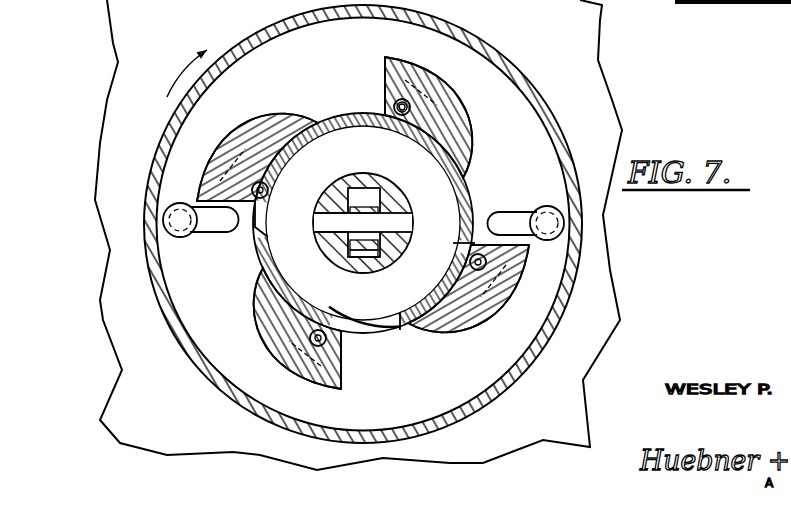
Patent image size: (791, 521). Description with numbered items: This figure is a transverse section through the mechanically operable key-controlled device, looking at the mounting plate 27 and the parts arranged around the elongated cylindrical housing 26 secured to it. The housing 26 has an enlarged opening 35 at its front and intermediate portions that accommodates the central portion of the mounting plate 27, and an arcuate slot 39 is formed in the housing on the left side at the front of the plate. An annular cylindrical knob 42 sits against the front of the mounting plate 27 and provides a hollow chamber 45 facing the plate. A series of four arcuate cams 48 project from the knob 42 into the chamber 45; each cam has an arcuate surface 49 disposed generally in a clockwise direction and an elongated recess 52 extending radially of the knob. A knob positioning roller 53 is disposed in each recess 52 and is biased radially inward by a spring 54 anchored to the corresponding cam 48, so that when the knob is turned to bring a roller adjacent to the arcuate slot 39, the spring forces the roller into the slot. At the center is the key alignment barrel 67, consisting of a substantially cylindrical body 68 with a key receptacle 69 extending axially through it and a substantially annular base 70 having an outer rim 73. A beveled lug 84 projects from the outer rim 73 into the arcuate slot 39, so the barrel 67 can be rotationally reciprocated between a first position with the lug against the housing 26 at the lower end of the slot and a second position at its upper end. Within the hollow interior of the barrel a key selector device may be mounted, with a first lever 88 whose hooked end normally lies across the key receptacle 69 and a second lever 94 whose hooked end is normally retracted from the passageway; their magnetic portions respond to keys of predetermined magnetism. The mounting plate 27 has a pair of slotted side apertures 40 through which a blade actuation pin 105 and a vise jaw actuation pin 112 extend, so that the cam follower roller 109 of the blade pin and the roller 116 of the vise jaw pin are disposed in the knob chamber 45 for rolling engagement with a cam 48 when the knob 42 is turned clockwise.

The mounting plate 27 is at (127, 43).
The annular cylindrical knob 42 is at (504, 45).
The hollow chamber 45 is at (497, 83).
The slotted side apertures 40 is at (212, 232).
The blade actuation pin 105 is at (163, 218).
The cam follower roller 109 is at (166, 230).
The roller 116 is at (565, 213).
The vise jaw actuation pin 112 is at (582, 232).
The housing 26 is at (258, 238).
The enlarged opening 35 is at (397, 329).
The beveled lug 84 is at (255, 213).
The arcuate cams 48 is at (443, 81).
The arcuate surface 49 is at (455, 118).
The elongated recess 52 is at (386, 57).
The spring 54 is at (445, 98).
The knob positioning roller 53 is at (400, 115).
The arcuate slot 39 is at (397, 103).
The annular base 70 is at (515, 208).
The outer rim 73 is at (438, 205).
The key receptacle 69 is at (316, 225).
The first lever 88 is at (373, 204).
The key alignment barrel 67 is at (318, 266).
The second lever 94 is at (372, 257).
The cylindrical body 68 is at (410, 253).